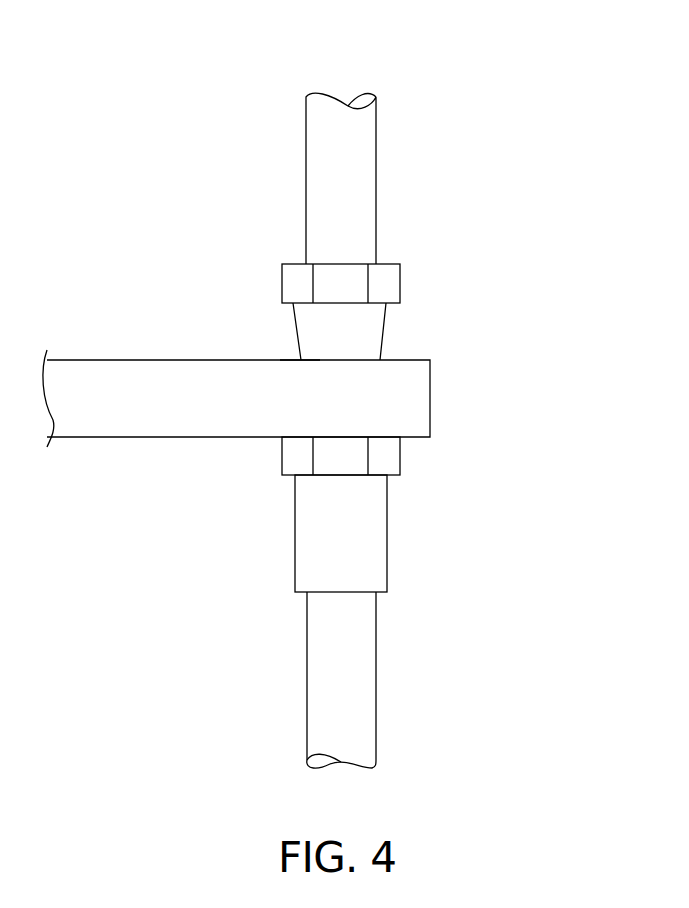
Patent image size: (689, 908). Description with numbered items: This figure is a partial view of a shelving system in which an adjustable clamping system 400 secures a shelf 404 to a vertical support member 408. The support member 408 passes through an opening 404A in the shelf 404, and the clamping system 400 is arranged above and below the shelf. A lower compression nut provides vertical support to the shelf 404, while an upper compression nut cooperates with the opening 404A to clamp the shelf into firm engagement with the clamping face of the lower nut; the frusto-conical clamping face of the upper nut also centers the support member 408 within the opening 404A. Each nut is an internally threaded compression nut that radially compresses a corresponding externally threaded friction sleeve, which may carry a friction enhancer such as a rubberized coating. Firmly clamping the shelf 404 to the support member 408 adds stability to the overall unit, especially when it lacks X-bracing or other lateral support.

The adjustable clamping system 400 is at (561, 68).
The support member 408 is at (376, 162).
The shelf 404 is at (128, 361).
The opening 404A is at (293, 357).